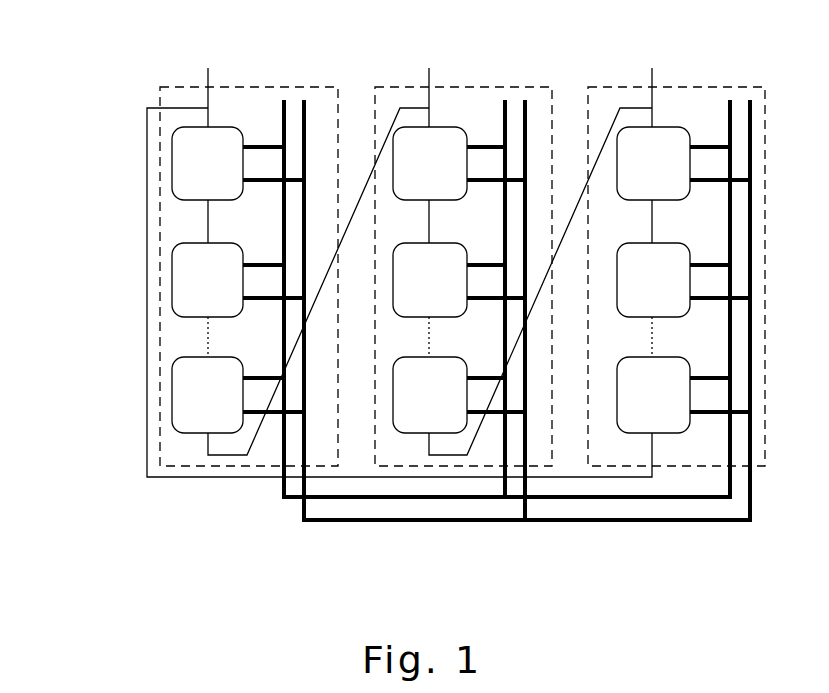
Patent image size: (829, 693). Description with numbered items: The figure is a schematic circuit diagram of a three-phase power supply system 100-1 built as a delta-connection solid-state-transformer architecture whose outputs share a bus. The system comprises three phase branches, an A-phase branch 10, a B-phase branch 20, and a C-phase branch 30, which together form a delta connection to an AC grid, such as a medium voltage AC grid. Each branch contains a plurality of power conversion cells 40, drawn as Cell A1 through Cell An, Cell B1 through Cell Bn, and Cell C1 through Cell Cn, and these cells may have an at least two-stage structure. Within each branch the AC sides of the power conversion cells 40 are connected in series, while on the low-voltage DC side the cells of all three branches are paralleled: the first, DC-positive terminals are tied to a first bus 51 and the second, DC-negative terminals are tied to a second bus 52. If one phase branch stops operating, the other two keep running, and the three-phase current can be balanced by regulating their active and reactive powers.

The three-phase power supply system 100-1 is at (98, 51).
The A-phase branch 10 is at (235, 85).
The B-phase branch 20 is at (456, 85).
The C-phase branch 30 is at (680, 85).
The power conversion cell 40 is at (228, 125).
The first bus 51 is at (284, 500).
The second bus 52 is at (355, 523).